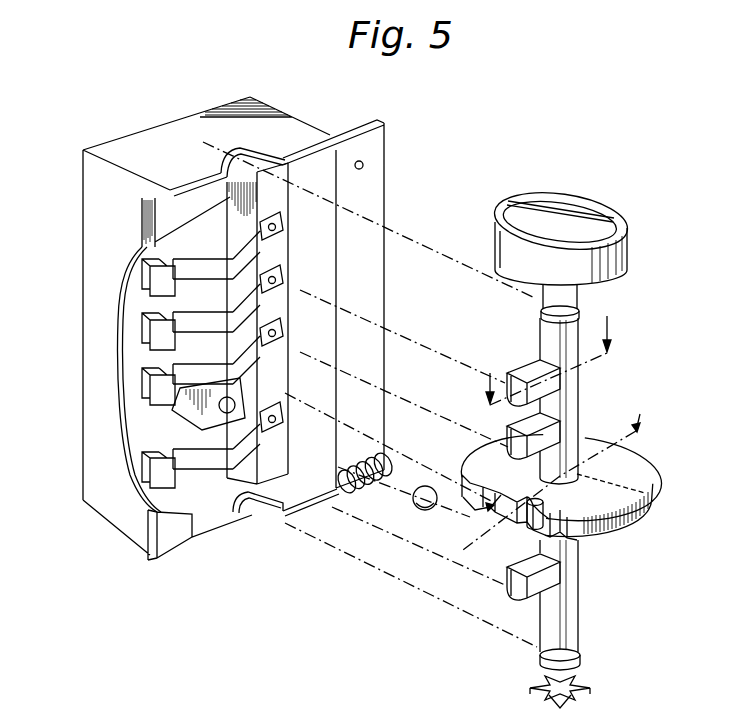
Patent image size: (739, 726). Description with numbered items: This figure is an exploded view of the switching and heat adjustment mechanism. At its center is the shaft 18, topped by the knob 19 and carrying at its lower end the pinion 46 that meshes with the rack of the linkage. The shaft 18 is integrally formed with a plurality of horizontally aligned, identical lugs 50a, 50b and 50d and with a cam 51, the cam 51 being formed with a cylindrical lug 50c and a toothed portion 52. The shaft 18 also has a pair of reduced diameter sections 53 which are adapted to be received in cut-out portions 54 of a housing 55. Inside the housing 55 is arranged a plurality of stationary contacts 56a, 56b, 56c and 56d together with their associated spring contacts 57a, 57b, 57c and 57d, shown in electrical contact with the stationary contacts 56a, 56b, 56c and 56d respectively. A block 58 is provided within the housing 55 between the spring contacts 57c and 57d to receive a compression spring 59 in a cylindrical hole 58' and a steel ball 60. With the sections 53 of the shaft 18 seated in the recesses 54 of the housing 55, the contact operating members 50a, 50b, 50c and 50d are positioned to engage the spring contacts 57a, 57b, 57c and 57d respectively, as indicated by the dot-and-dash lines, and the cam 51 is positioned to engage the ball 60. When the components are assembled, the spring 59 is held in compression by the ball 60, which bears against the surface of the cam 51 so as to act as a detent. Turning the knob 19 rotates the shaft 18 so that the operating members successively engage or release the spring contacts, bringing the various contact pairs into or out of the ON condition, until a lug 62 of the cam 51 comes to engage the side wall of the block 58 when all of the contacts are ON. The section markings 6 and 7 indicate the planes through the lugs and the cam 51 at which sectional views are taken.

The section line 6- 6 is at (542, 346).
The section line 7- 7 is at (558, 468).
The shaft 18 is at (577, 396).
The knob 19 is at (614, 203).
The pinion 46 is at (591, 687).
The lug 50a is at (523, 370).
The lug 50b is at (503, 451).
The cylindrical lug 50c is at (546, 510).
The lug 50d is at (503, 587).
The cam 51 is at (655, 492).
The toothed portion 52 is at (643, 522).
The reduced diameter sections 53 is at (541, 305).
The cut-out portions 54 is at (247, 160).
The housing 55 is at (284, 108).
The stationary contact 56a is at (142, 292).
The stationary contact 56b is at (144, 346).
The stationary contact 56c is at (144, 399).
The stationary contact 56d is at (146, 488).
The spring contact 57a is at (232, 260).
The spring contact 57b is at (221, 312).
The spring contact 57c is at (222, 366).
The spring contact 57d is at (220, 450).
The block 58 is at (251, 398).
The cylindrical hole 58' is at (319, 412).
The compression spring 59 is at (386, 491).
The steel ball 60 is at (428, 511).
The lug 62 is at (465, 474).